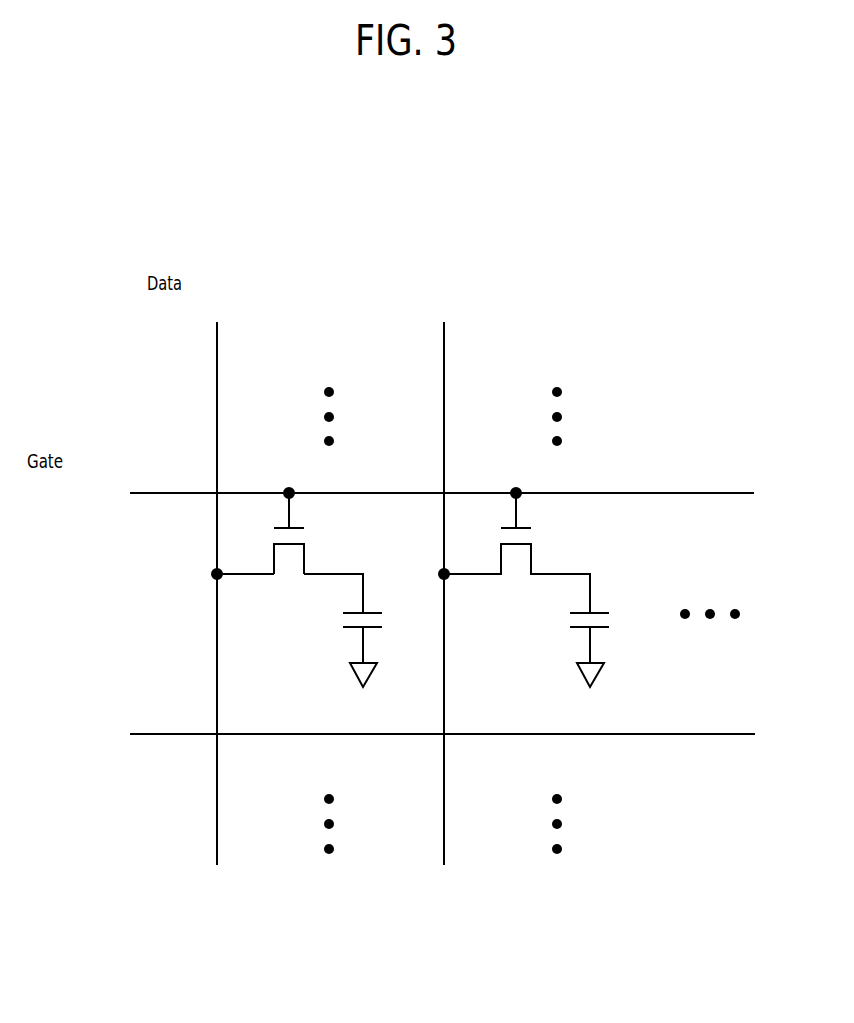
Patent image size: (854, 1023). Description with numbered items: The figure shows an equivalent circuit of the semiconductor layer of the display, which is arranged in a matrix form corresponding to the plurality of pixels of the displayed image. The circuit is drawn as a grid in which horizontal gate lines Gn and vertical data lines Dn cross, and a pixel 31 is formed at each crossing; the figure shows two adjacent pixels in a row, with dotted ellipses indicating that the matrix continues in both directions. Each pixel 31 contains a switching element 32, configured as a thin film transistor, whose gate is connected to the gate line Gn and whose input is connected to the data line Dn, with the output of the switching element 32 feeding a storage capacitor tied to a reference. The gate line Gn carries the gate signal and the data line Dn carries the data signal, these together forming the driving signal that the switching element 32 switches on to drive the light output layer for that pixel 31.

The pixel 31 is at (265, 561).
The switching element 32 is at (279, 529).
The data line Dn is at (216, 579).
The gate line Gn is at (421, 495).